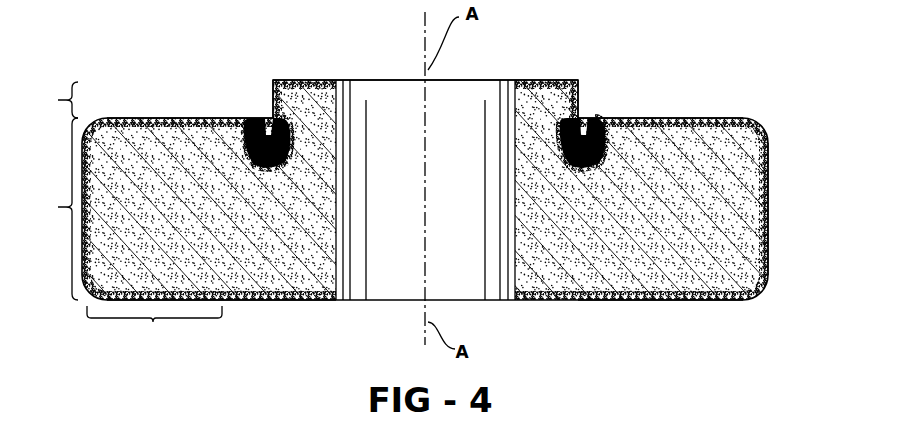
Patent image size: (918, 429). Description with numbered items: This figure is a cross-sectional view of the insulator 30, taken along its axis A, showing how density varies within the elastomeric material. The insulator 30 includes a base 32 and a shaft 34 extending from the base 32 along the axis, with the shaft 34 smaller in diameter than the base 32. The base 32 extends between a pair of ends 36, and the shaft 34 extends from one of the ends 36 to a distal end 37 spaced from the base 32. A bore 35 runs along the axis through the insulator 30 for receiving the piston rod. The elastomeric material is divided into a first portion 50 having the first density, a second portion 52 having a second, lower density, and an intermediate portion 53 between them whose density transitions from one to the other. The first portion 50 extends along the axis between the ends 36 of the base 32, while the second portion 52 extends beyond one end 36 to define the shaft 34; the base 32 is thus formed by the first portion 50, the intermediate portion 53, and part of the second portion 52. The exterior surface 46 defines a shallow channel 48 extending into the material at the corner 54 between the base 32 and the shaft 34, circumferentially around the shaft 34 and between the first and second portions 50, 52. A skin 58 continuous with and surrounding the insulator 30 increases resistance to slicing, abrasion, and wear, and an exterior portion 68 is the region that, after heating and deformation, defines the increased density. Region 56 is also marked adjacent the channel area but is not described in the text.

The insulator 30 is at (736, 300).
The base 32 is at (55, 209).
The shaft 34 is at (55, 100).
The bore 35 is at (493, 292).
The ends 36 is at (722, 118).
The distal end 37 is at (535, 80).
The exterior surface 46 is at (677, 300).
The channel 48 is at (587, 134).
The first portion 50 is at (154, 326).
The second portion 52 is at (306, 80).
The intermediate portion 53 is at (262, 300).
The corner 54 is at (582, 128).
The left annular groove 56 is at (270, 130).
The skin 58 is at (769, 158).
The exterior portion 68 is at (262, 132).